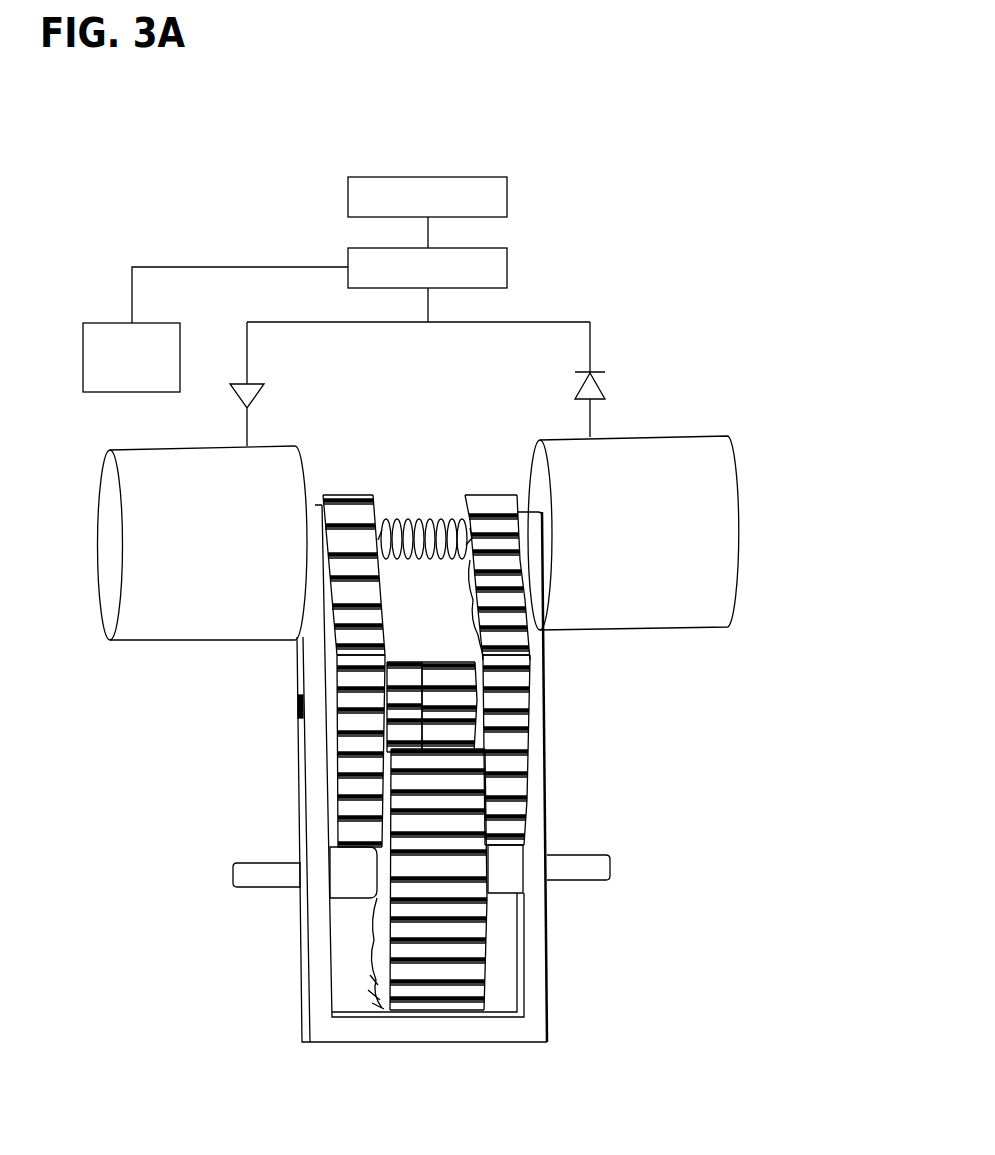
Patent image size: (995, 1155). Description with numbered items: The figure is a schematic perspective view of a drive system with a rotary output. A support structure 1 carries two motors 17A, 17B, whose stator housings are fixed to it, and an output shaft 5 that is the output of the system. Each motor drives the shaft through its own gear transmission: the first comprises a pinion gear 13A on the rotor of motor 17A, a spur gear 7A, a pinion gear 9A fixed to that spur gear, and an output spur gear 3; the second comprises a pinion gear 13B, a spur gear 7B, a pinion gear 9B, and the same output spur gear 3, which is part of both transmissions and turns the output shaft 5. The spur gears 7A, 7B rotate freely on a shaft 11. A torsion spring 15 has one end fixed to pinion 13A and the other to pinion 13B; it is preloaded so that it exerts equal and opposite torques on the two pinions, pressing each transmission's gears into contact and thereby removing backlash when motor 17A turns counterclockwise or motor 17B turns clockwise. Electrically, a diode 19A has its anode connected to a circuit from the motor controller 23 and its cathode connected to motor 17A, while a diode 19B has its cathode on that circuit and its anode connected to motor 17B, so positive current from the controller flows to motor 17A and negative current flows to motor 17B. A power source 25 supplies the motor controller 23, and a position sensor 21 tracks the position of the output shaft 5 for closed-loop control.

The support structure 1 is at (302, 983).
The output spur gear 3 is at (487, 948).
The output shaft 5 is at (233, 877).
The spur gear 7A is at (337, 800).
The spur gear 7B is at (485, 790).
The pinion gear 9A is at (405, 662).
The pinion gear 9B is at (476, 725).
The shaft 11 is at (298, 714).
The pinion gear 13A is at (345, 495).
The pinion gear 13B is at (487, 495).
The spring 15 is at (407, 518).
The motor 17A is at (100, 608).
The motor 17B is at (736, 619).
The diode 19A is at (262, 389).
The diode 19B is at (575, 393).
The position sensor 21 is at (143, 374).
The motor controller 23 is at (440, 285).
The power source 25 is at (440, 214).